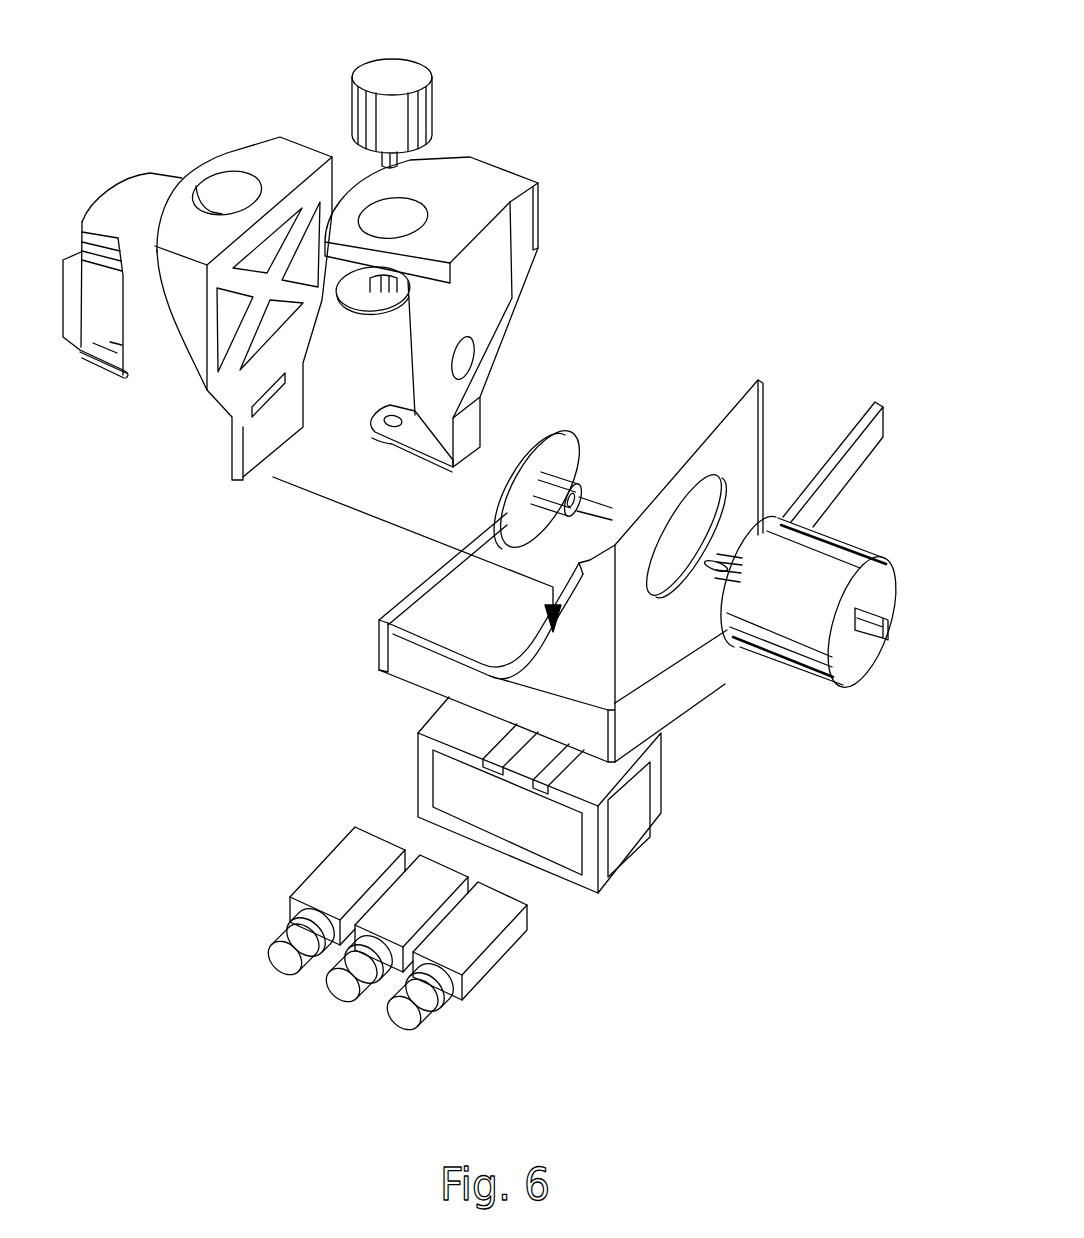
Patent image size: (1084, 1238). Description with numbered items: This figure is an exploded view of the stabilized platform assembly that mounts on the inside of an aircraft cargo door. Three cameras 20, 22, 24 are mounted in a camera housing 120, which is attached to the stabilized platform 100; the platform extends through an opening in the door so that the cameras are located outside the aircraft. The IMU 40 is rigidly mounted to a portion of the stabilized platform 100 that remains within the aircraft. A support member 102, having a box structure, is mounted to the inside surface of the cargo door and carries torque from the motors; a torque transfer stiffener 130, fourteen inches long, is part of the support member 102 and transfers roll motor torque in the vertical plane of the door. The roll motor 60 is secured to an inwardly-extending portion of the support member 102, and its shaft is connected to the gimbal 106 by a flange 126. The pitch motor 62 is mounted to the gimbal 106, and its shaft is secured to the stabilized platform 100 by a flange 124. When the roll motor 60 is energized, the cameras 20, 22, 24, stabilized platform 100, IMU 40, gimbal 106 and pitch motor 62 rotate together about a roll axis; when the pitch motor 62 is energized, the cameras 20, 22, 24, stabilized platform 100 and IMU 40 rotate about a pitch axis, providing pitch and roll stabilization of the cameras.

The IMU 40 is at (130, 190).
The stabilized platform 100 is at (250, 158).
The pitch motor 62 is at (432, 112).
The flange 124 is at (392, 312).
The gimbal 106 is at (489, 345).
The flange 126 is at (538, 449).
The support member 102 is at (752, 440).
The torque transfer stiffener 130 is at (871, 490).
The roll motor 60 is at (760, 653).
The camera housing 120 is at (664, 757).
The camera 20 is at (478, 978).
The camera 22 is at (433, 877).
The camera 24 is at (337, 857).